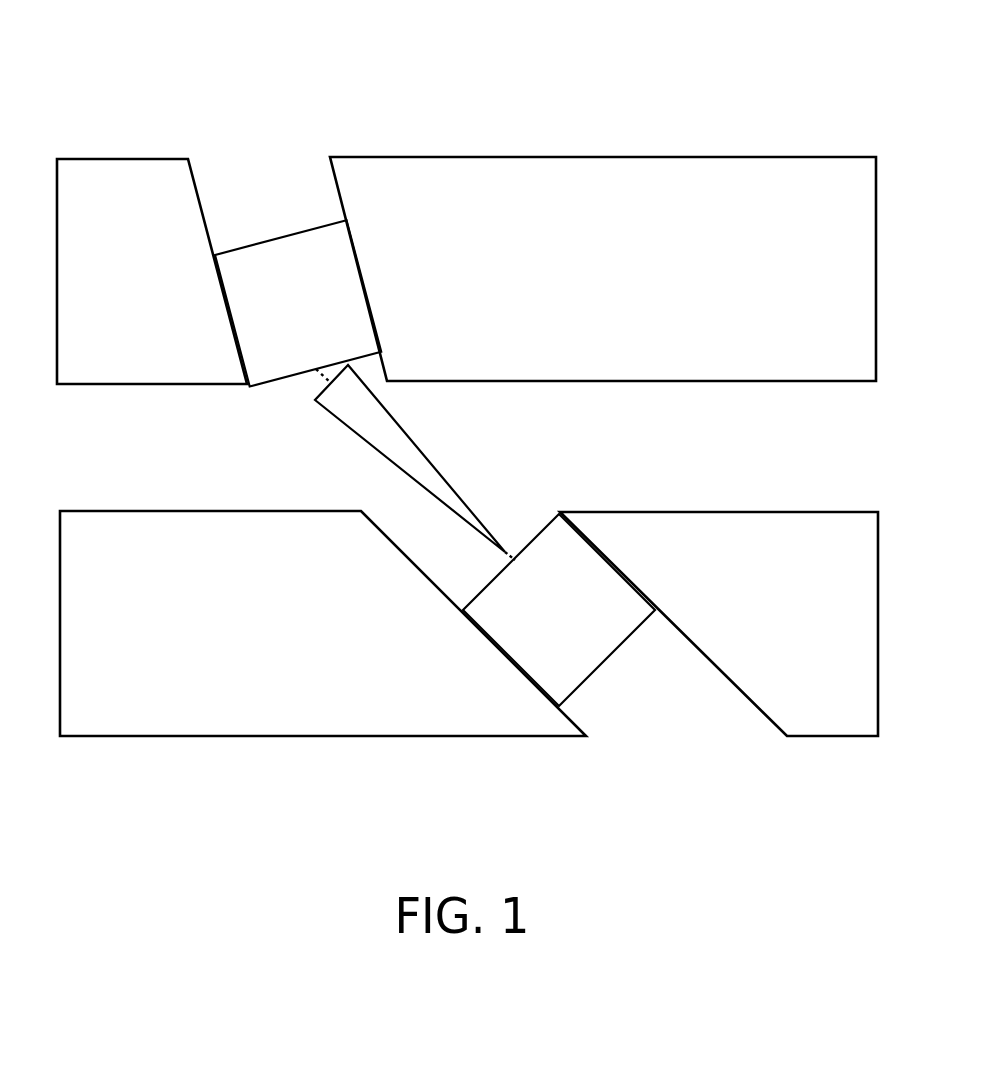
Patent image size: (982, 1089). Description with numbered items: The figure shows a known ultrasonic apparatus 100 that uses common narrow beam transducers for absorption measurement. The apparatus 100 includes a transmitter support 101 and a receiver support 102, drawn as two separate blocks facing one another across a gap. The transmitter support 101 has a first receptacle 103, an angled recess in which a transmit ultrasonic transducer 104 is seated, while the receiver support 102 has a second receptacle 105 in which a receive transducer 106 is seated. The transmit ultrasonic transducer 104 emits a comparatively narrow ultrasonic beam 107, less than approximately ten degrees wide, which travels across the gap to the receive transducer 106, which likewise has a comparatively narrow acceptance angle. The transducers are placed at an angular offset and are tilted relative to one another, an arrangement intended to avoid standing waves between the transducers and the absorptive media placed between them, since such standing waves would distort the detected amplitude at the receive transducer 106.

The ultrasonic apparatus 100 is at (475, 31).
The transmitter support 101 is at (138, 700).
The receiver support 102 is at (763, 203).
The first receptacle 103 is at (628, 687).
The transmit ultrasonic transducer 104 is at (552, 550).
The second receptacle 105 is at (238, 188).
The receive transducer 106 is at (310, 250).
The ultrasonic beam 107 is at (333, 415).